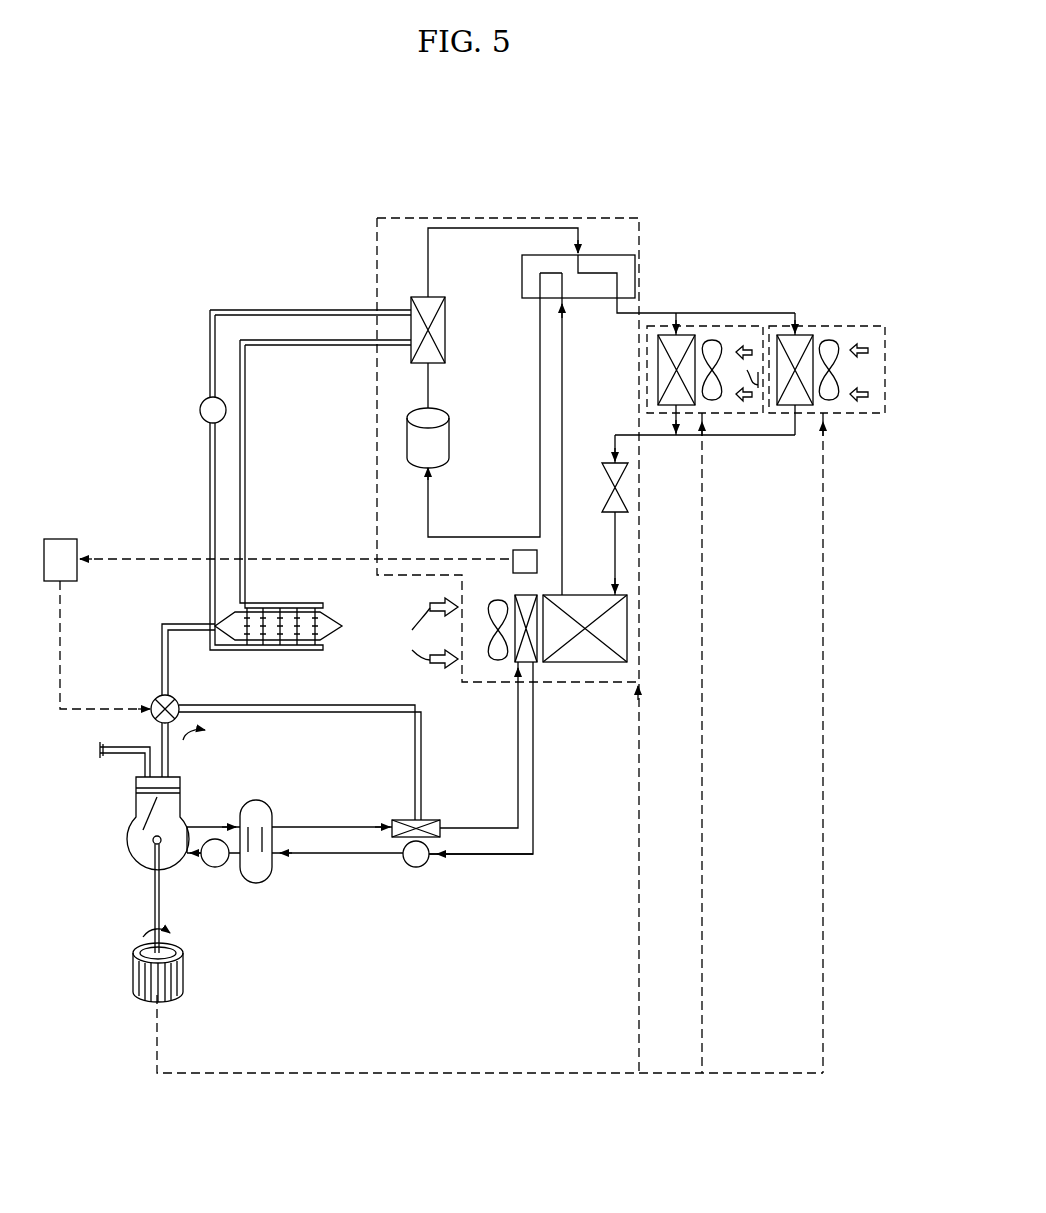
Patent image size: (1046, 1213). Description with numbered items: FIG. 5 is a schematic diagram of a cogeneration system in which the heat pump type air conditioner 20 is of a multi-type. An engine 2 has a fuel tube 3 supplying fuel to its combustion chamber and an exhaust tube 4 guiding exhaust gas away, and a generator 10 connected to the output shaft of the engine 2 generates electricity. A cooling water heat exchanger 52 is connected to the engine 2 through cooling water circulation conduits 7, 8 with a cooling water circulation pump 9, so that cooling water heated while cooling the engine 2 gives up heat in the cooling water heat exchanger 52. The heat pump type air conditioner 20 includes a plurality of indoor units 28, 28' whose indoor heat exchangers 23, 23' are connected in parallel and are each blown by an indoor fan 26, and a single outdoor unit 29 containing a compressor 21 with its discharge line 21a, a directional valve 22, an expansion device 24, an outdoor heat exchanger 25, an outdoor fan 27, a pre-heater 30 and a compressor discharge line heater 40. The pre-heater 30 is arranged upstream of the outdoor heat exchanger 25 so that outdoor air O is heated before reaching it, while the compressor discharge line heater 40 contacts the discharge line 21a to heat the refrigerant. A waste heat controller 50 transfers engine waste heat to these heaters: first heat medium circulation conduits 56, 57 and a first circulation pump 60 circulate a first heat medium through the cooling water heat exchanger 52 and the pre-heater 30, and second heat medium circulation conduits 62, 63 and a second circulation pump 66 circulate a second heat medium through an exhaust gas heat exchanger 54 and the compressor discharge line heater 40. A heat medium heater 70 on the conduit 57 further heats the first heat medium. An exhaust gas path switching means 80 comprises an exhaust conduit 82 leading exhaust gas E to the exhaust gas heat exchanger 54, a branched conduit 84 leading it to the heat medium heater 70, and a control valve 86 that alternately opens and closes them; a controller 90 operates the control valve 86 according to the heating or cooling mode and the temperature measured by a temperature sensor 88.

The engine 2 is at (135, 848).
The fuel tube 3 is at (120, 756).
The exhaust tube 4 is at (170, 762).
The cooling water circulation conduit 7 is at (207, 826).
The cooling water circulation conduit 8 is at (233, 856).
The cooling water circulation pump 9 is at (216, 868).
The generator 10 is at (150, 998).
The heat pump type air conditioner 20 is at (685, 182).
The compressor 21 is at (449, 447).
The discharge line 21a is at (430, 375).
The directional valve 22 is at (630, 257).
The indoor heat exchanger 23 is at (705, 349).
The indoor heat exchanger 23' is at (797, 349).
The expansion device 24 is at (622, 470).
The outdoor heat exchanger 25 is at (627, 628).
The indoor fan 26 is at (718, 408).
The outdoor fan 27 is at (497, 655).
The indoor unit 28 is at (706, 325).
The indoor unit 28' is at (827, 330).
The outdoor unit 29 is at (546, 218).
The pre-heater 30 is at (533, 662).
The compressor discharge line heater 40 is at (421, 300).
The waste heat controller 50 is at (508, 864).
The cooling water heat exchanger 52 is at (266, 803).
The exhaust gas heat exchanger 54 is at (275, 645).
The first heat medium circulation conduit 56 is at (537, 822).
The first heat medium circulation conduit 57 is at (481, 834).
The first circulation pump 60 is at (421, 868).
The second heat medium circulation conduit 62 is at (210, 357).
The second heat medium circulation conduit 63 is at (245, 393).
The second circulation pump 66 is at (200, 410).
The heat medium heater 70 is at (425, 820).
The exhaust gas path switching means 80 is at (150, 695).
The exhaust conduit 82 is at (162, 648).
The branched conduit 84 is at (328, 712).
The control valve 86 is at (176, 698).
The temperature sensor 88 is at (537, 556).
The controller 90 is at (62, 540).
The exhaust gas E is at (395, 843).
The outdoor air O is at (424, 633).